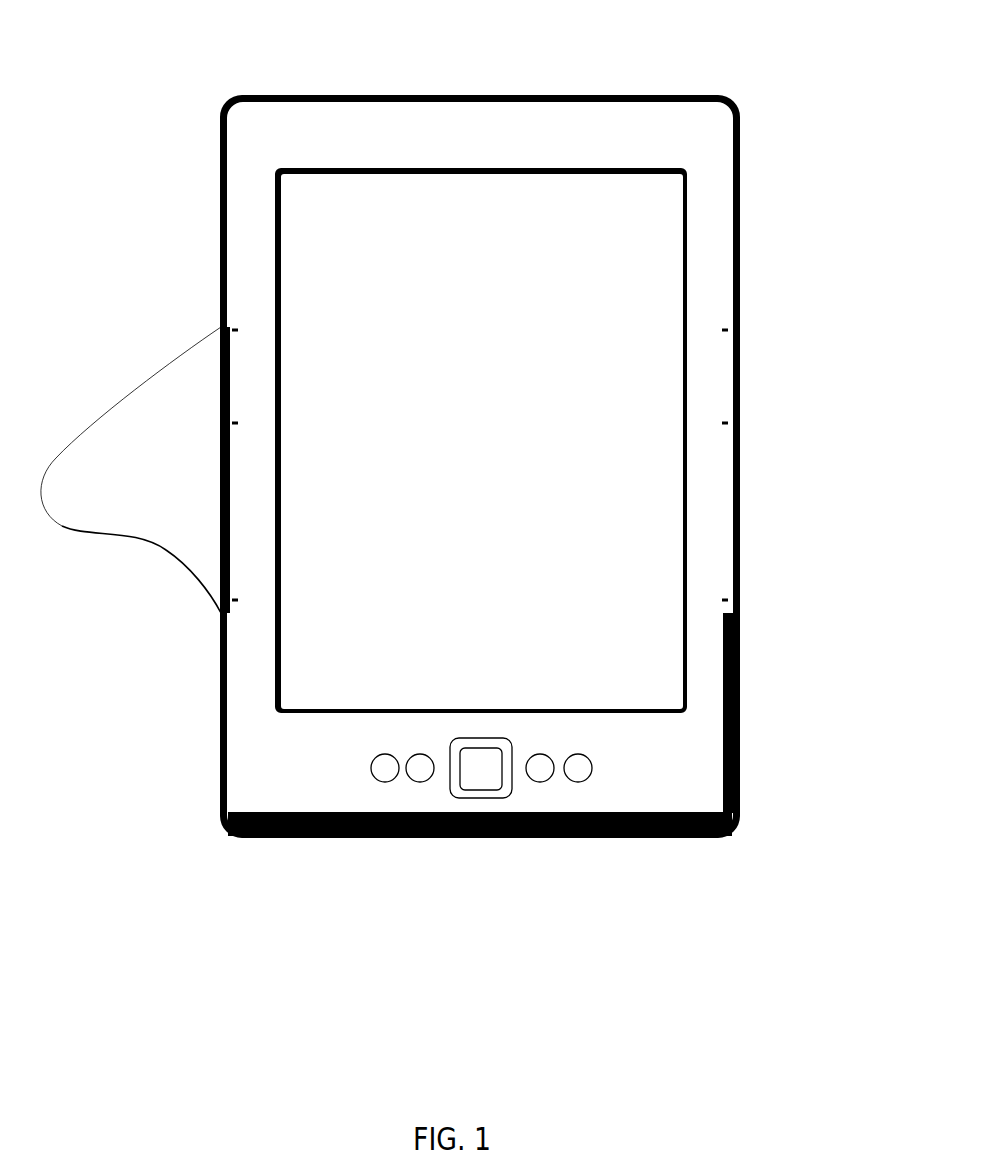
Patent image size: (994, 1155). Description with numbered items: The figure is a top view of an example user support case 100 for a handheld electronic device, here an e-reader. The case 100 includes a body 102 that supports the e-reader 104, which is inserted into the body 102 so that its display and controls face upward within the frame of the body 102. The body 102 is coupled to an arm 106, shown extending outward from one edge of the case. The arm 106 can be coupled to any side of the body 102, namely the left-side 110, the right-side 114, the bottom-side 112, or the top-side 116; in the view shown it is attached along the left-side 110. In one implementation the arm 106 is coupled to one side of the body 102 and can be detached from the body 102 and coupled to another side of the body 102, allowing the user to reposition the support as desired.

The user support case 100 is at (773, 43).
The body 102 is at (237, 93).
The e-reader 104 is at (598, 130).
The arm 106 is at (117, 545).
The left-side 110 is at (220, 733).
The bottom-side 112 is at (470, 847).
The right-side 114 is at (740, 727).
The top-side 116 is at (480, 83).